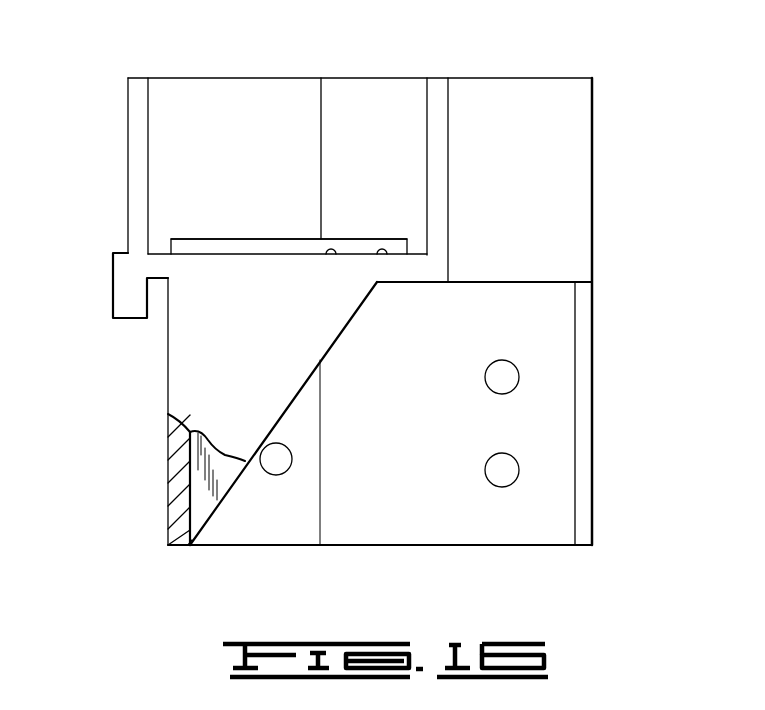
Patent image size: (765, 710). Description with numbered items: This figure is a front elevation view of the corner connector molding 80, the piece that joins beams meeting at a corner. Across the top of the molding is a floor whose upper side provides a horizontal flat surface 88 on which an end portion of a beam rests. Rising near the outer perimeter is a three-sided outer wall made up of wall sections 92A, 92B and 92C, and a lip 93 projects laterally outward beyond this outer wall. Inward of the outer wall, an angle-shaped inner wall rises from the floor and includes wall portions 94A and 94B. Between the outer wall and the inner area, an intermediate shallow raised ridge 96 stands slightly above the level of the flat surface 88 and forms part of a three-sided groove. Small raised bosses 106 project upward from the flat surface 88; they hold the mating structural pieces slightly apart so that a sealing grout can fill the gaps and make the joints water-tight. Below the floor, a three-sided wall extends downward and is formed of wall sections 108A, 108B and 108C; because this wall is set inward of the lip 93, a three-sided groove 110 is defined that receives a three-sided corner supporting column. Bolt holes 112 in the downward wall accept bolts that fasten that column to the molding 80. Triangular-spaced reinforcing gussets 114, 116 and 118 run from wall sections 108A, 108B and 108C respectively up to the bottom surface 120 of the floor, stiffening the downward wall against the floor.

The corner connector molding 80 is at (627, 63).
The horizontal flat surface 88 is at (195, 239).
The wall section 92A is at (137, 110).
The wall section 92B is at (225, 86).
The wall section 92C is at (400, 88).
The lip 93 is at (113, 254).
The wall portion 94A is at (445, 108).
The wall portion 94B is at (572, 120).
The intermediate shallow raised ridge 96 is at (212, 238).
The raised bosses 106 is at (330, 253).
The wall section 108A is at (175, 500).
The wall section 108B is at (250, 535).
The wall section 108C is at (485, 530).
The three-sided groove 110 is at (147, 312).
The bolt holes 112 is at (512, 460).
The reinforcing gusset 114 is at (323, 340).
The reinforcing gusset 116 is at (198, 537).
The reinforcing gusset 118 is at (583, 451).
The bottom surface 120 is at (548, 284).